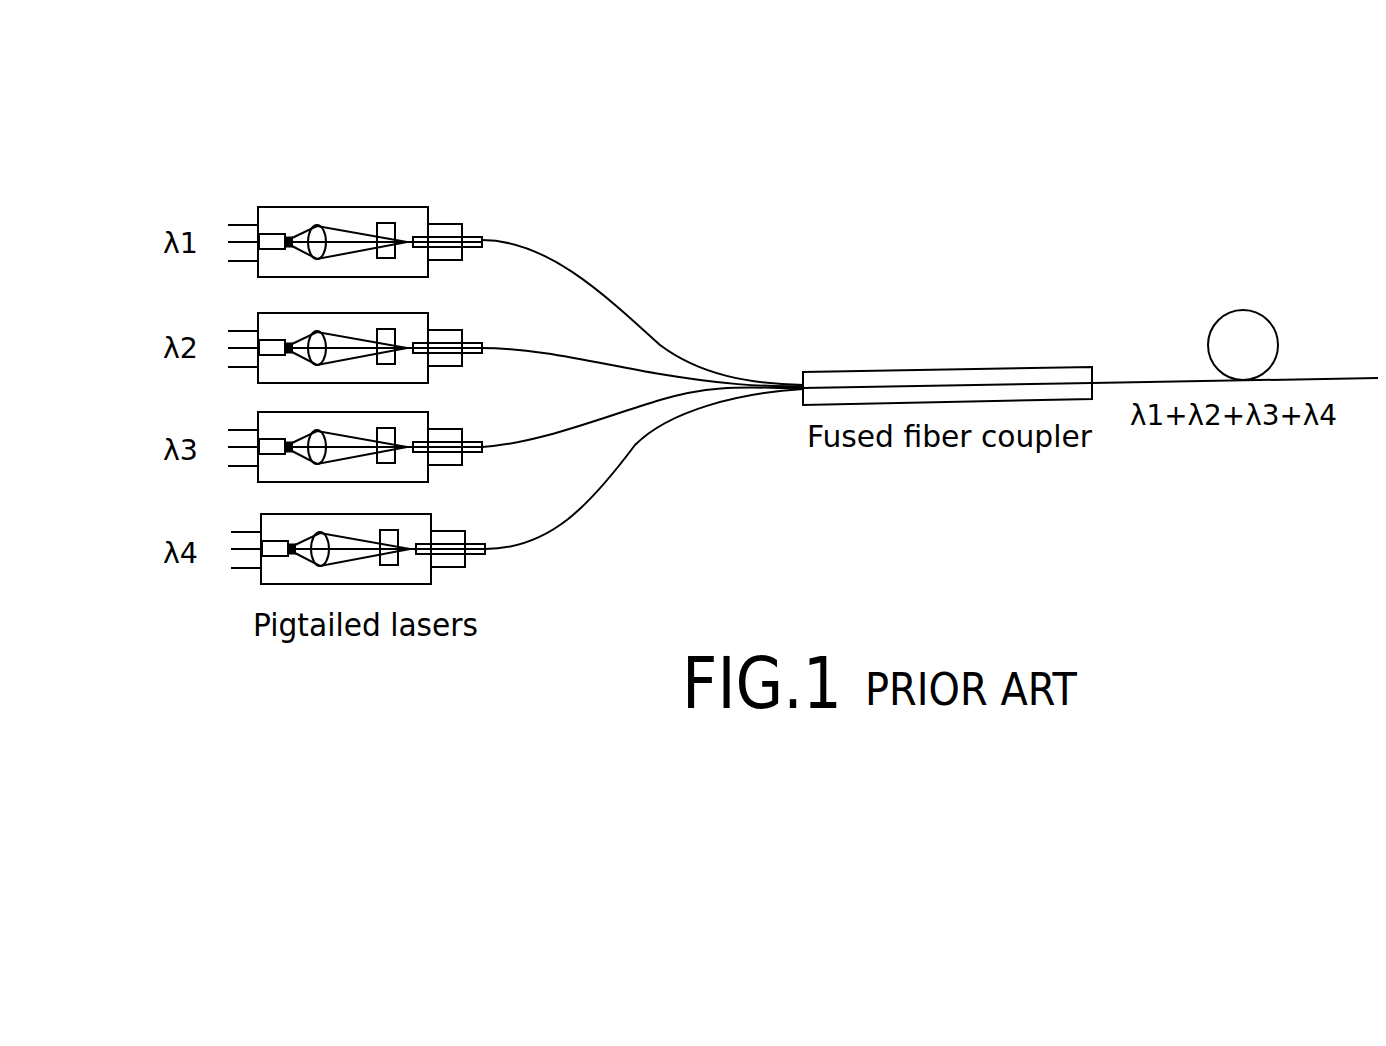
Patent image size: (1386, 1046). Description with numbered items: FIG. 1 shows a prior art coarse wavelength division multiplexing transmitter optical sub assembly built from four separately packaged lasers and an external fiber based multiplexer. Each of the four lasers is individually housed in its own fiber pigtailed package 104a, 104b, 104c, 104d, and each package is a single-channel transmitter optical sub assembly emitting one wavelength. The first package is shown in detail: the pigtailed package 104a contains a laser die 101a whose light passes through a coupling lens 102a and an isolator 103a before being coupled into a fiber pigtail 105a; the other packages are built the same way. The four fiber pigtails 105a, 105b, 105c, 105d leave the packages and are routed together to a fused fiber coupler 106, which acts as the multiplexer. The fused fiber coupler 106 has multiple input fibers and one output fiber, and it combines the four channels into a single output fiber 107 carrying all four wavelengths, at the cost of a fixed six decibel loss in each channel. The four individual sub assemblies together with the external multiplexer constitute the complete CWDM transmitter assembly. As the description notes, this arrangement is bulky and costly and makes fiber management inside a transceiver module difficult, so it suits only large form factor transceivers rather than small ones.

The laser die 101a is at (287, 207).
The coupling lens 102a is at (332, 207).
The isolator 103a is at (392, 207).
The fiber pigtailed package 104a is at (420, 207).
The fiber pigtailed package 104b is at (260, 313).
The fiber pigtailed package 104c is at (260, 413).
The fiber pigtailed package 104d is at (263, 515).
The fiber pigtail 105a is at (496, 238).
The fiber pigtail 105b is at (506, 345).
The fiber pigtail 105c is at (500, 445).
The fiber pigtail 105d is at (506, 546).
The fused fiber coupler 106 is at (876, 371).
The output fiber 107 is at (1331, 378).